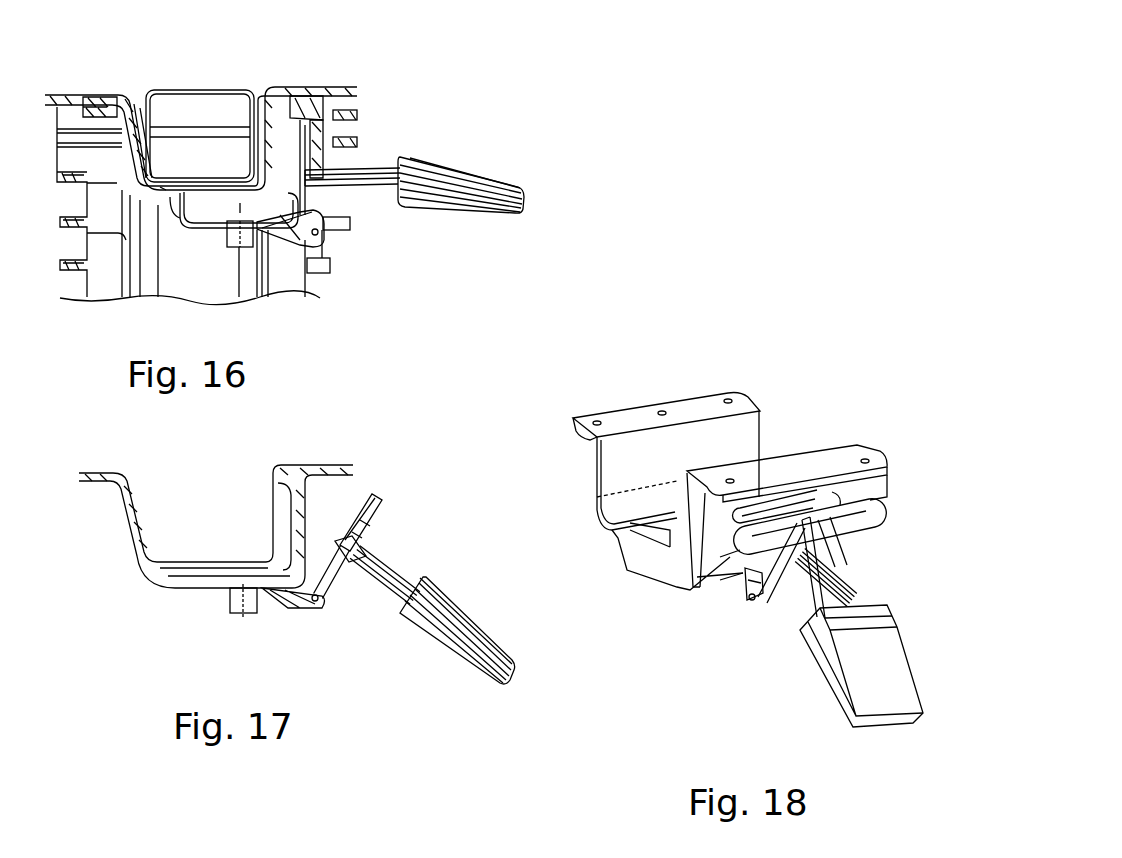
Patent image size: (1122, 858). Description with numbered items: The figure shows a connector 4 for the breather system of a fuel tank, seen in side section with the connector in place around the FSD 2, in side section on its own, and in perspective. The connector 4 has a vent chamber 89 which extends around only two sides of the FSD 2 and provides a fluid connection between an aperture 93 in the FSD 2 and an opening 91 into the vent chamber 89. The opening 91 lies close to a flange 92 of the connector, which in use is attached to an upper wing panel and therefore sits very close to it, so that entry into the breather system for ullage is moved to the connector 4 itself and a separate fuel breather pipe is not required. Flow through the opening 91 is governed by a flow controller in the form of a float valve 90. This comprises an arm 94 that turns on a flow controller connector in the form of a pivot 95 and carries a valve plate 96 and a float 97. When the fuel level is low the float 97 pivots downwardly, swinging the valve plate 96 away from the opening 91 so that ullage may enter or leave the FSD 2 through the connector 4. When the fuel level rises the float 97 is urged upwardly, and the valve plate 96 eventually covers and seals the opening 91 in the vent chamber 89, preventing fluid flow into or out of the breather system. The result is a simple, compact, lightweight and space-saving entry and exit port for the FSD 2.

In FIG. 16, the FSD 2 is at (138, 93).
In FIG. 16, the connector 4 is at (135, 178).
In FIG. 17, the connector 4 is at (127, 517).
In FIG. 18, the connector 4 is at (760, 408).
In FIG. 16, the vent chamber 89 is at (267, 205).
In FIG. 17, the vent chamber 89 is at (202, 567).
In FIG. 18, the vent chamber 89 is at (618, 538).
In FIG. 16, the float valve 90 is at (380, 172).
In FIG. 18, the float valve 90 is at (790, 593).
In FIG. 16, the opening 91 is at (357, 103).
In FIG. 18, the opening 91 is at (840, 498).
In FIG. 18, the flange 92 is at (843, 463).
In FIG. 16, the aperture 93 is at (188, 178).
In FIG. 18, the arm 94 is at (853, 591).
In FIG. 16, the pivot 95 is at (322, 234).
In FIG. 17, the pivot 95 is at (315, 608).
In FIG. 18, the pivot 95 is at (749, 598).
In FIG. 17, the valve plate 96 is at (383, 512).
In FIG. 18, the valve plate 96 is at (690, 590).
In FIG. 16, the float 97 is at (485, 194).
In FIG. 17, the float 97 is at (433, 607).
In FIG. 18, the float 97 is at (867, 690).